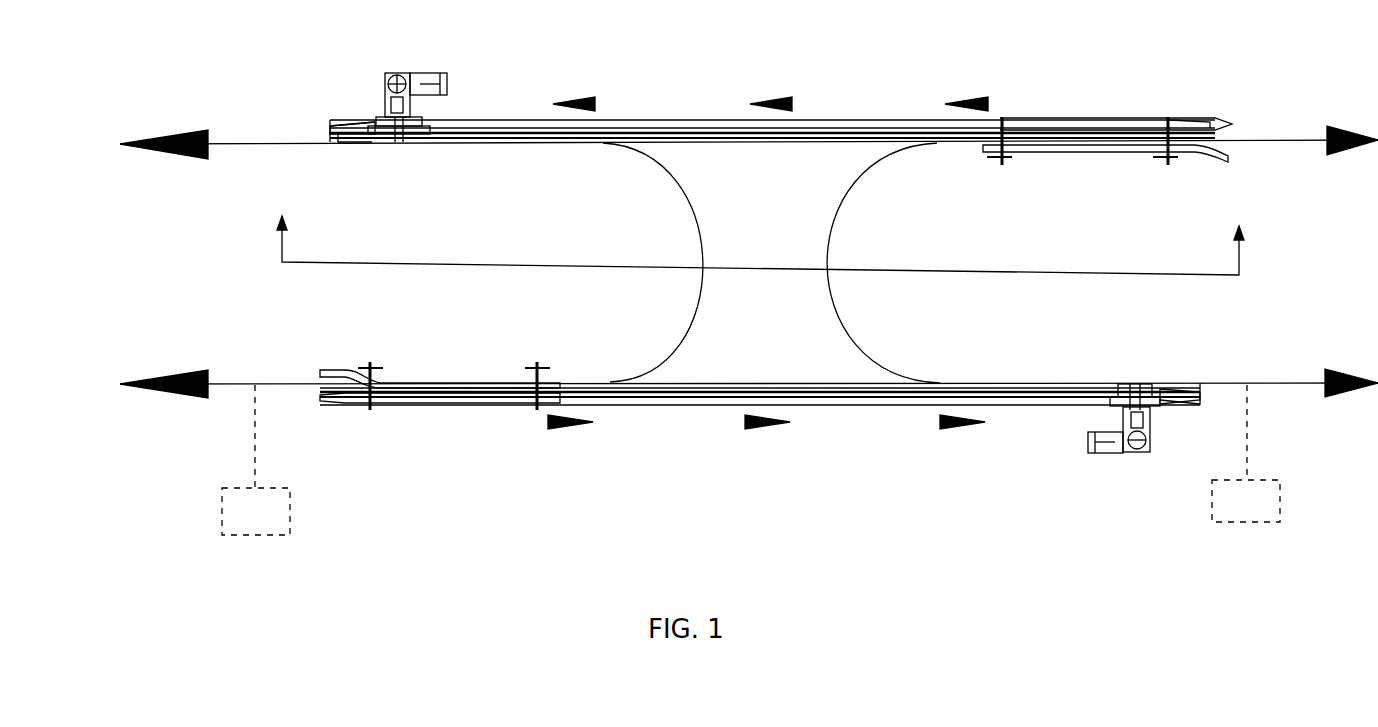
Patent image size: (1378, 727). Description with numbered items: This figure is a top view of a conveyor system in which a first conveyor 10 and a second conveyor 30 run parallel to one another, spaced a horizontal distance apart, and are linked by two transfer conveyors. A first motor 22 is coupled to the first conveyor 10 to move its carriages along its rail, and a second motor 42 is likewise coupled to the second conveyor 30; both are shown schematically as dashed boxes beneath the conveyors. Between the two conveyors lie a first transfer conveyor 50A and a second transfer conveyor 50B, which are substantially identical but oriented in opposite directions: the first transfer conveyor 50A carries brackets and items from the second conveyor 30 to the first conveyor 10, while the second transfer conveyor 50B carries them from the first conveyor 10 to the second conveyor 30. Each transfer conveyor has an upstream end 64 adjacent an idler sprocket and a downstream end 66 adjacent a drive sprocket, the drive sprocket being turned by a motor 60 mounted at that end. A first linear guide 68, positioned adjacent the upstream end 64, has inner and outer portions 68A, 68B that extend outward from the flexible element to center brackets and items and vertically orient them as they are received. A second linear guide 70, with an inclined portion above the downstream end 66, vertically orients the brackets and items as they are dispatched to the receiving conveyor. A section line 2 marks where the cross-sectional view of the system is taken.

The first conveyor 10 is at (1265, 140).
The second conveyor 30 is at (253, 143).
The section line 2- 2 is at (756, 245).
The first motor 22 is at (1246, 453).
The second motor 42 is at (256, 460).
The first transfer conveyor 50A is at (838, 400).
The second transfer conveyor 50B is at (870, 128).
The motor 60 is at (428, 73).
The upstream end 64 is at (1138, 78).
The downstream end 66 is at (485, 68).
The first linear guide 68 is at (756, 254).
The inner portion 68A is at (1215, 148).
The outer portion 68B is at (1215, 120).
The second linear guide 70 is at (352, 112).